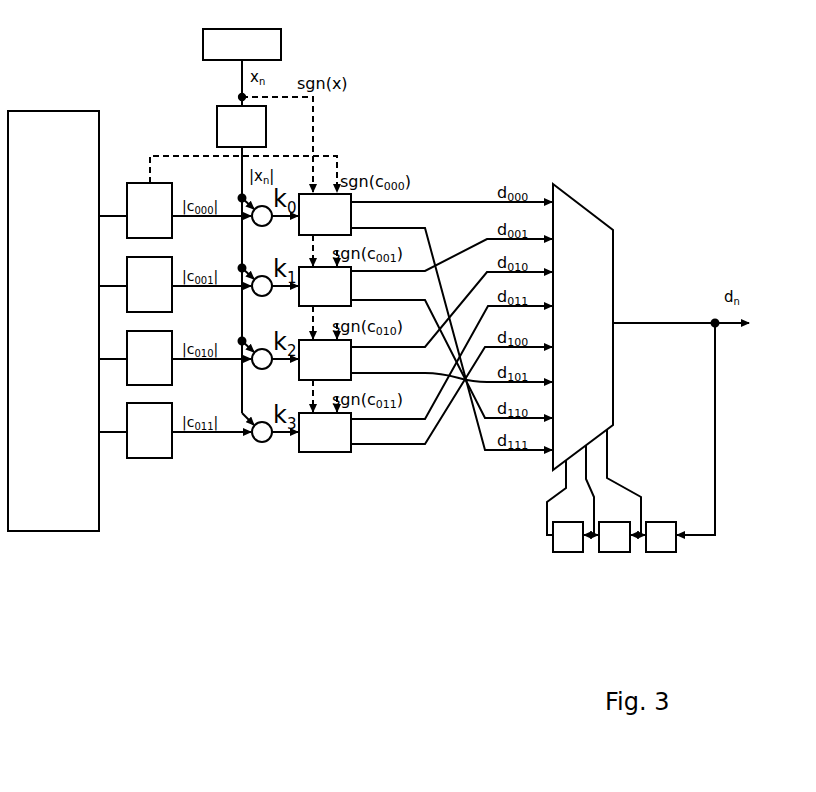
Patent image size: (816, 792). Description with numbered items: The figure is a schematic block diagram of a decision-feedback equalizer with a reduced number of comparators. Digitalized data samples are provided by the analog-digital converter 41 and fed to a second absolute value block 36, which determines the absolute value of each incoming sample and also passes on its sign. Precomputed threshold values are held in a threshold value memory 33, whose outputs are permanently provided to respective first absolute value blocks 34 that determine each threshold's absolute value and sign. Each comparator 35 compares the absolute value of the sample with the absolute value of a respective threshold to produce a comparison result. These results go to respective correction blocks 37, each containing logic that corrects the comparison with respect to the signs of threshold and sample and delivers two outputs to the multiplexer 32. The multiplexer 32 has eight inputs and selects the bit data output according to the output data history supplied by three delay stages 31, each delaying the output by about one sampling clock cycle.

The delay stage 31 is at (577, 537).
The multiplexer 32 is at (601, 285).
The threshold value memory 33 is at (80, 128).
The first absolute value block 34 is at (163, 202).
The comparator 35 is at (258, 442).
The second absolute value block 36 is at (227, 119).
The correction block 37 is at (333, 440).
The analog-digital converter 41 is at (262, 47).